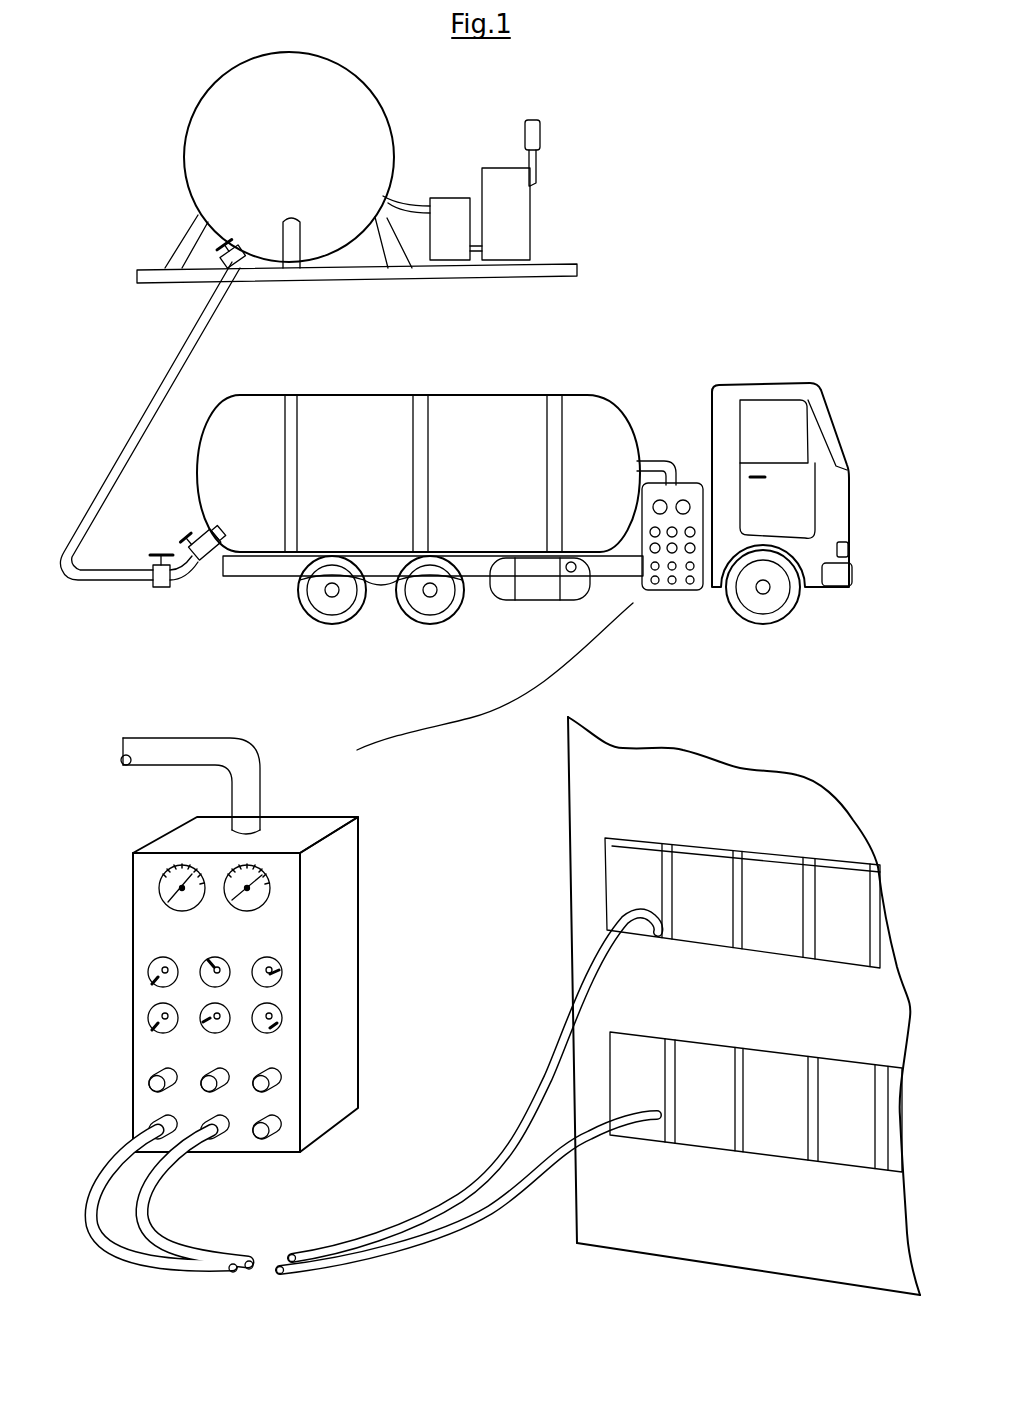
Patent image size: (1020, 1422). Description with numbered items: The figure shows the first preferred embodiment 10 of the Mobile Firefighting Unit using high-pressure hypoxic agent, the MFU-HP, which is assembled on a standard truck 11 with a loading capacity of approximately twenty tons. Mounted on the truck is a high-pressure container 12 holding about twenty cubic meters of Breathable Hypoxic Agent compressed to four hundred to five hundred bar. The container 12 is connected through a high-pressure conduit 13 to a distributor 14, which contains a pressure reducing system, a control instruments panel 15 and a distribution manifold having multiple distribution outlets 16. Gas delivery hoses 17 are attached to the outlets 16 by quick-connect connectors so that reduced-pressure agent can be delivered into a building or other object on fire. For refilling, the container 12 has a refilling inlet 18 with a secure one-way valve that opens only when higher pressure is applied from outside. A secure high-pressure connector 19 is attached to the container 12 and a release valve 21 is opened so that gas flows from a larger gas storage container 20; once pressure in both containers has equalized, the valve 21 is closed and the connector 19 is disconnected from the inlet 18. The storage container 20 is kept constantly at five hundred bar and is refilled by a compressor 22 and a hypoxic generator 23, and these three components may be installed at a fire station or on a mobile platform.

The first preferred embodiment of the Mobile Firefighting Unit 10 is at (628, 337).
The standard truck 11 is at (733, 395).
The high-pressure container 12 is at (418, 473).
The high-pressure conduit 13 is at (645, 463).
The distributor 14 is at (208, 949).
The control instruments panel 15 is at (278, 888).
The distribution outlets 16 is at (163, 1068).
The gas delivery hoses 17 is at (117, 1253).
The refilling inlet 18 is at (183, 522).
The secure high-pressure connector 19 is at (183, 355).
The gas storage container 20 is at (357, 167).
The release valve 21 is at (240, 268).
The compressor 22 is at (456, 229).
The hypoxic generator 23 is at (511, 190).